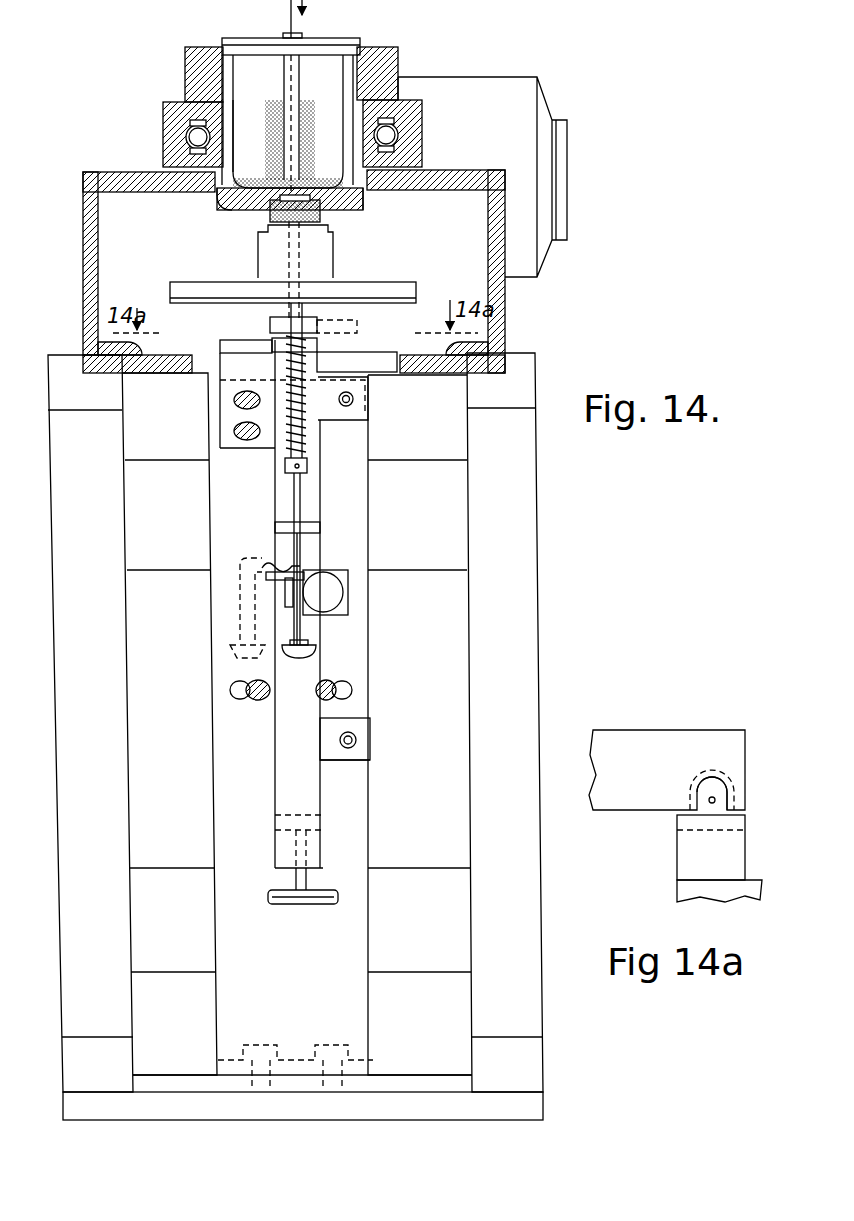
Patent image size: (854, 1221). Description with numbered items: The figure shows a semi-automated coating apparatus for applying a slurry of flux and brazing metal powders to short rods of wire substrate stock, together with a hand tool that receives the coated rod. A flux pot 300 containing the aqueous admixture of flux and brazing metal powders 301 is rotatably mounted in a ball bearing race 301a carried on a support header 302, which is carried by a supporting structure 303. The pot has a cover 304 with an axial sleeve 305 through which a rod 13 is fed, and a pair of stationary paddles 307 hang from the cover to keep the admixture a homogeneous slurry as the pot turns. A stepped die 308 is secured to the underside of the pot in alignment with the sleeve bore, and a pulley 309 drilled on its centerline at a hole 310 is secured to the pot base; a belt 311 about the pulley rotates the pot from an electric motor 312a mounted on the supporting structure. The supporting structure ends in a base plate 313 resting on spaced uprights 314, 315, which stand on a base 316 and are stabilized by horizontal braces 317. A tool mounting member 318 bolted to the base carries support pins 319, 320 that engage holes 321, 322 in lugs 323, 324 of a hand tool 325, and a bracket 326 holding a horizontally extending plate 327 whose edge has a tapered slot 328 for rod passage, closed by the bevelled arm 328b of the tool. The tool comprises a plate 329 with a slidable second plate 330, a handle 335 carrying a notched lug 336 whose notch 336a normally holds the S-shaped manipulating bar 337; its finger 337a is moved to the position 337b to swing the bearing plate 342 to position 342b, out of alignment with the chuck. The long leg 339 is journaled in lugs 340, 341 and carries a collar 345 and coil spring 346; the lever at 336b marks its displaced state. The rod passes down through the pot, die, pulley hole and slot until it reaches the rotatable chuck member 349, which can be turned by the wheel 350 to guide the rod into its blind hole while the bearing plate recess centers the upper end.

In FIG. 14, the flux pot 300 is at (365, 87).
In FIG. 14, the aqueous admixture of flux and brazing metal powders 301 is at (365, 198).
In FIG. 14, the ball bearing race 301a is at (402, 137).
In FIG. 14, the support header 302 is at (168, 135).
In FIG. 14, the supporting structure 303 is at (91, 167).
In FIG. 14, the cover 304 is at (382, 45).
In FIG. 14, the sleeve 305 is at (280, 80).
In FIG. 14, the stationary paddles 307 is at (333, 133).
In FIG. 14, the stepped die 308 is at (272, 211).
In FIG. 14, the pulley 309 is at (325, 266).
In FIG. 14, the hole 310 is at (287, 257).
In FIG. 14, the belt 311 is at (410, 292).
In FIG. 14, the motor 312a is at (543, 112).
In FIG. 14, the base plate 313 is at (157, 370).
In FIG. 14, the upright 314 is at (75, 620).
In FIG. 14, the upright 315 is at (523, 670).
In FIG. 14, the base 316 is at (270, 1107).
In FIG. 14, the horizontal braces 317 is at (140, 563).
In FIG. 14, the tool mounting member 318 is at (357, 498).
In FIG. 14, the support pin 319 is at (353, 395).
In FIG. 14, the support pin 320 is at (358, 735).
In FIG. 14, the hole 321 is at (350, 407).
In FIG. 14, the hole 322 is at (358, 740).
In FIG. 14, the lug 323 is at (337, 415).
In FIG. 14, the lug 324 is at (343, 757).
In FIG. 14, the hand tool 325 is at (327, 739).
In FIG. 14, the bracket 326 is at (233, 367).
In FIG. 14, the horizontally extending plate 327 is at (232, 343).
In FIG. 14A, the horizontally extending plate 327 is at (665, 740).
In FIG. 14, the slot 328 is at (318, 342).
In FIG. 14A, the slot 328 is at (722, 795).
In FIG. 14A, the arm 328b is at (680, 835).
In FIG. 14, the plate 329 is at (310, 673).
In FIG. 14A, the plate 329 is at (683, 888).
In FIG. 14, the second plate 330 is at (315, 803).
In FIG. 14, the handle 335 is at (338, 600).
In FIG. 14, the notched lug 336 is at (280, 557).
In FIG. 14, the notch 336a is at (303, 567).
In FIG. 14, the fork arm 336b is at (280, 557).
In FIG. 14, the S-shaped manipulating bar 337 is at (300, 547).
In FIG. 14, the finger 337a is at (300, 660).
In FIG. 14, the swung position of finger piece 337b is at (240, 658).
In FIG. 14, the long leg 339 is at (302, 495).
In FIG. 14, the lug 340 is at (283, 523).
In FIG. 14, the journal lug 341 is at (318, 347).
In FIG. 14, the bearing plate 342 is at (278, 325).
In FIG. 14, the swung position of bearing plate 342b is at (358, 322).
In FIG. 14, the collar 345 is at (307, 468).
In FIG. 14, the coil spring 346 is at (300, 412).
In FIG. 14, the chuck member 349 is at (285, 817).
In FIG. 14, the wheel 350 is at (273, 897).
In FIG. 14A, the rod 13 is at (712, 797).